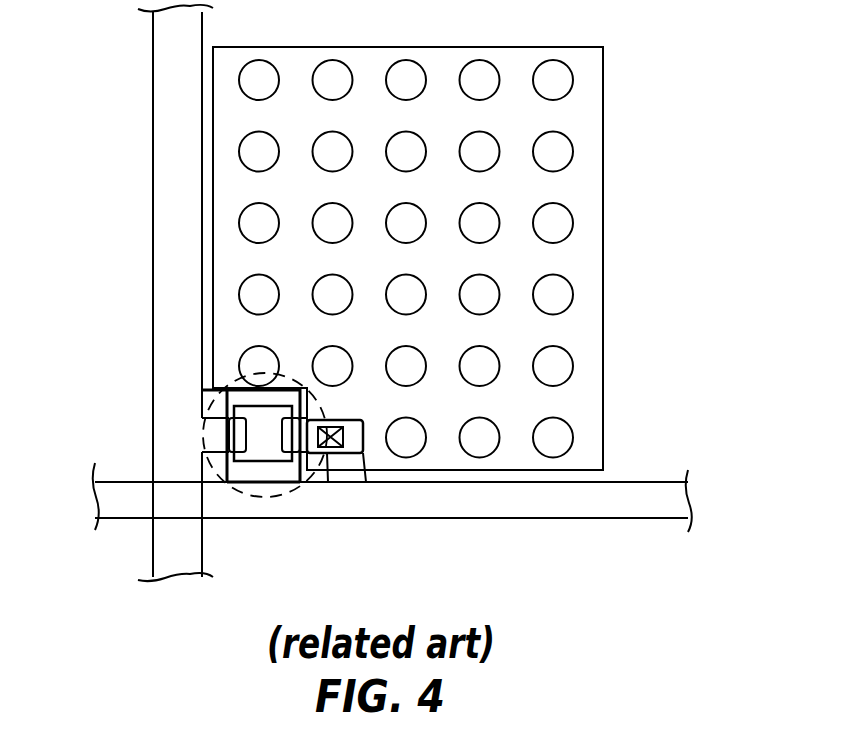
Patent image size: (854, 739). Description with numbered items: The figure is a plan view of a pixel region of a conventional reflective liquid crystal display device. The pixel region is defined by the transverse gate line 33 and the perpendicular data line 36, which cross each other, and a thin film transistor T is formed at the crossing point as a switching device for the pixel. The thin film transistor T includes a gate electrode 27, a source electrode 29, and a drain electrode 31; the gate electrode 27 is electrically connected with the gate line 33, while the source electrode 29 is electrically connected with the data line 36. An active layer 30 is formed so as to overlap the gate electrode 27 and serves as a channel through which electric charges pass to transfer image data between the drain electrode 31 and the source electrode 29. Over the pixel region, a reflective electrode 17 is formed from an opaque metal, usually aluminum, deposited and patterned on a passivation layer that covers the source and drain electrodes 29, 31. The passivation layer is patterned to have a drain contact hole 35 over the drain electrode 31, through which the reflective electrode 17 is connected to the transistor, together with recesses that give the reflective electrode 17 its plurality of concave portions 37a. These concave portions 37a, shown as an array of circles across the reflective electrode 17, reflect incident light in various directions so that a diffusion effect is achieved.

The data line 36 is at (172, 130).
The gate line 33 is at (607, 512).
The reflective electrode 17 is at (603, 322).
The concave portions 37a is at (556, 222).
The gate electrode 27 is at (220, 390).
The source electrode 29 is at (216, 437).
The active layer 30 is at (247, 463).
The drain electrode 31 is at (365, 455).
The drain contact hole 35 is at (331, 456).
The thin film transistor T is at (275, 496).